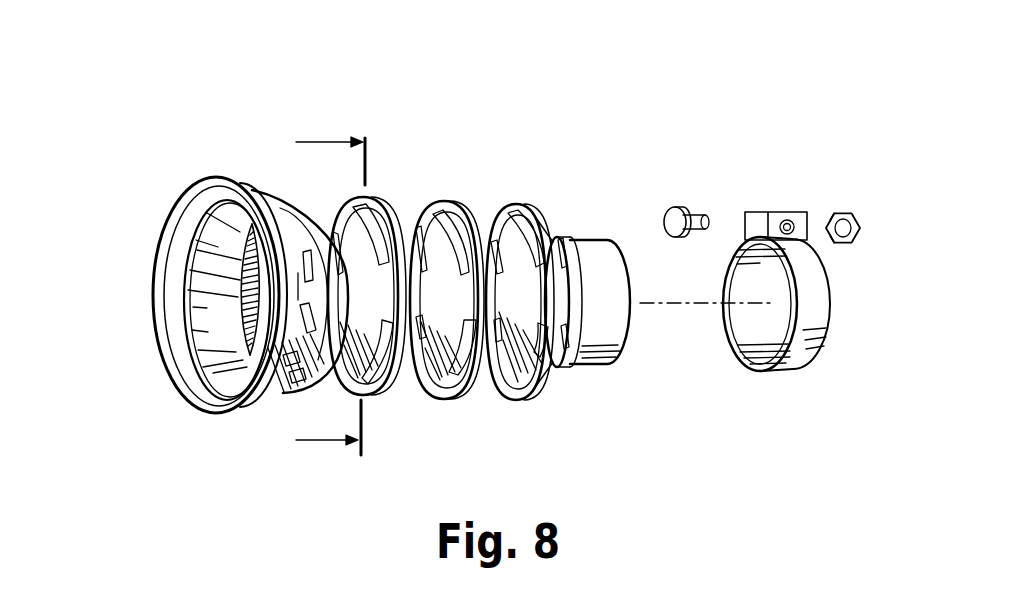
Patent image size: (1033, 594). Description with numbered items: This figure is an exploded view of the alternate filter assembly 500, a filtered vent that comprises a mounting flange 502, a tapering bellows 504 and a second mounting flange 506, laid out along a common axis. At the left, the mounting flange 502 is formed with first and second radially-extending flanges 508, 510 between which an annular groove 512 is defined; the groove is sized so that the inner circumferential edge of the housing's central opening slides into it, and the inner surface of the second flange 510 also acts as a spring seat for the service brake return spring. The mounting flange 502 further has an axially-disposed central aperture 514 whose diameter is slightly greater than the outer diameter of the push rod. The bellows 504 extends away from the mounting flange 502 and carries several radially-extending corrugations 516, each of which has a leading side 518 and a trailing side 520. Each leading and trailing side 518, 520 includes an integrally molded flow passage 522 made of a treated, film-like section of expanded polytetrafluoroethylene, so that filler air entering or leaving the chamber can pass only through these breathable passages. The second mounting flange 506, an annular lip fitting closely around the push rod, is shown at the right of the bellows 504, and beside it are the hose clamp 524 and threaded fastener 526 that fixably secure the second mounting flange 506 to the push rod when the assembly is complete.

The filter assembly 500 is at (489, 283).
The mounting flange 502 is at (385, 284).
The tapering bellows 504 is at (463, 286).
The second mounting flange 506 is at (608, 278).
The first radially-extending flange 508 is at (257, 407).
The second radially-extending flange 510 is at (176, 380).
The annular groove 512 is at (276, 208).
The central aperture 514 is at (210, 236).
The corrugations 516 is at (433, 237).
The leading side 518 is at (366, 250).
The trailing side 520 is at (495, 290).
The flow passage 522 is at (450, 224).
The hose clamp 524 is at (808, 298).
The threaded fastener 526 is at (683, 220).